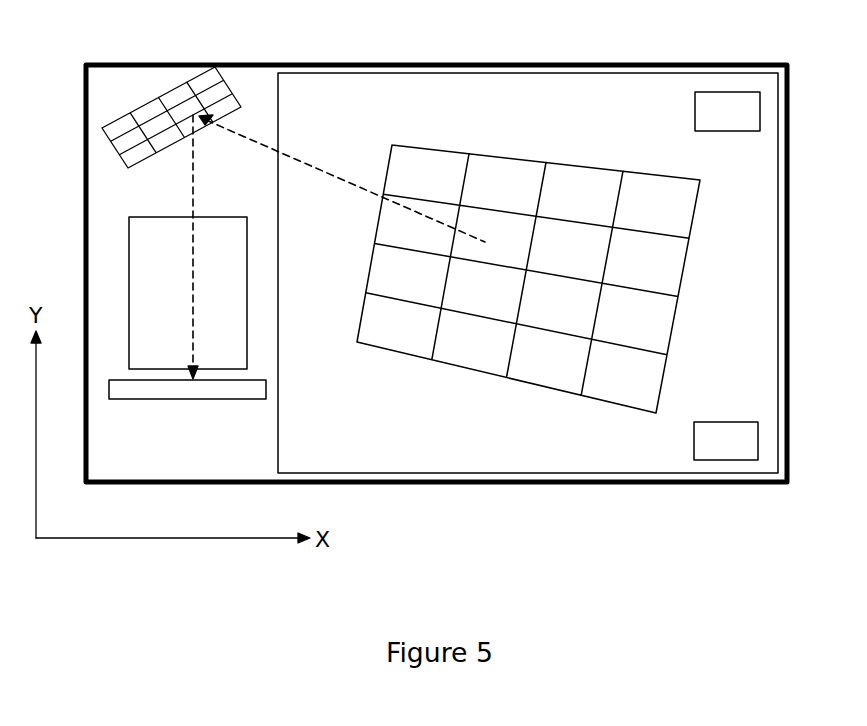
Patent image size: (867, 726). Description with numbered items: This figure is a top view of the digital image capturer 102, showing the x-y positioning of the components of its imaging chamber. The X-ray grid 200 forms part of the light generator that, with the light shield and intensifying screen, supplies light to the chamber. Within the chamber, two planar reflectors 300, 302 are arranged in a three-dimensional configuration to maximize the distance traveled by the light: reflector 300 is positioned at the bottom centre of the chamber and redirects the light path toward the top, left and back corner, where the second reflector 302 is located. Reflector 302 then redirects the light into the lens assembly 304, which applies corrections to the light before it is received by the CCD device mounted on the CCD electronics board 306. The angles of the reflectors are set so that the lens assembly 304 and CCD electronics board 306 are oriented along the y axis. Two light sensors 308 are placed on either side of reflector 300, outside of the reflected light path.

The digital image capturer 102 is at (74, 198).
The X-ray grid 200 is at (567, 474).
The reflector 300 is at (672, 338).
The second reflector 302 is at (142, 100).
The lens assembly 304 is at (129, 238).
The CCD electronics board 306 is at (193, 400).
The light sensors 308 is at (695, 113).